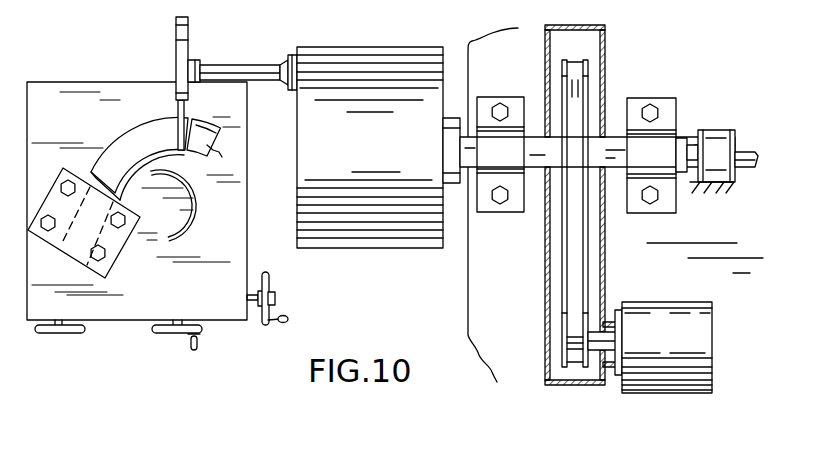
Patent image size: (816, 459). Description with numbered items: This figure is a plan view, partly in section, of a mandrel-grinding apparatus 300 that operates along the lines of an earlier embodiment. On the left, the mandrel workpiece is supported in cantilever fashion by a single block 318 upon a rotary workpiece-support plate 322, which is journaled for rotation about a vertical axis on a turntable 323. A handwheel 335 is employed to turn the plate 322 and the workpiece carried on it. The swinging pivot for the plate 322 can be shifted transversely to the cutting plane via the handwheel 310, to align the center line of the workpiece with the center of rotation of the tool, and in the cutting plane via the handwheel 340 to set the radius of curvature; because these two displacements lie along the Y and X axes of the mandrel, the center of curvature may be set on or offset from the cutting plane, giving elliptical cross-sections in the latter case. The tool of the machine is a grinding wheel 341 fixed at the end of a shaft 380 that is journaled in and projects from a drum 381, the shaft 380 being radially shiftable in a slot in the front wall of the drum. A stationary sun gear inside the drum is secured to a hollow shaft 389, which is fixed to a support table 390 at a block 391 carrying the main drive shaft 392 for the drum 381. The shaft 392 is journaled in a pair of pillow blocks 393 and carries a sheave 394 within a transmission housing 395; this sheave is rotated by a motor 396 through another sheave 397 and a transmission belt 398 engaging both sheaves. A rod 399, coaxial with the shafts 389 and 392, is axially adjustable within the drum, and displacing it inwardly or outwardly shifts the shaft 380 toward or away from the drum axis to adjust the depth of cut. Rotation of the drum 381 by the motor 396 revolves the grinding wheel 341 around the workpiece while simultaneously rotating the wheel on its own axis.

The apparatus 300 is at (402, 145).
The handwheel 310 is at (270, 290).
The block 318 is at (115, 248).
The rotary workpiece-support plate 322 is at (182, 222).
The turntable 323 is at (233, 310).
The handwheel 335 is at (50, 333).
The handwheel 340 is at (173, 333).
The grinding wheel 341 is at (185, 107).
The shaft 380 is at (235, 68).
The drum 381 is at (372, 238).
The hollow shaft 389 is at (688, 140).
The support table 390 is at (465, 292).
The block 391 is at (722, 137).
The main drive shaft 392 is at (610, 170).
The pillow blocks 393 is at (493, 207).
The sheave 394 is at (588, 66).
The transmission housing 395 is at (604, 275).
The motor 396 is at (672, 305).
The sheave 397 is at (565, 343).
The transmission belt 398 is at (567, 275).
The rod 399 is at (744, 168).